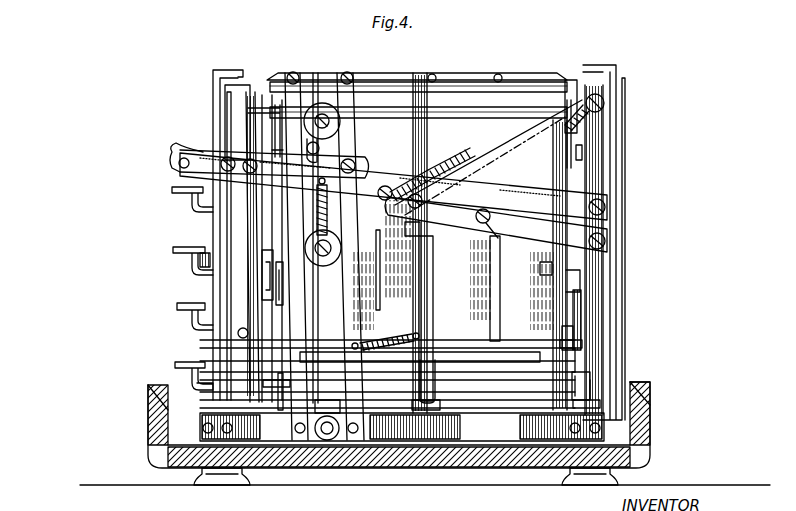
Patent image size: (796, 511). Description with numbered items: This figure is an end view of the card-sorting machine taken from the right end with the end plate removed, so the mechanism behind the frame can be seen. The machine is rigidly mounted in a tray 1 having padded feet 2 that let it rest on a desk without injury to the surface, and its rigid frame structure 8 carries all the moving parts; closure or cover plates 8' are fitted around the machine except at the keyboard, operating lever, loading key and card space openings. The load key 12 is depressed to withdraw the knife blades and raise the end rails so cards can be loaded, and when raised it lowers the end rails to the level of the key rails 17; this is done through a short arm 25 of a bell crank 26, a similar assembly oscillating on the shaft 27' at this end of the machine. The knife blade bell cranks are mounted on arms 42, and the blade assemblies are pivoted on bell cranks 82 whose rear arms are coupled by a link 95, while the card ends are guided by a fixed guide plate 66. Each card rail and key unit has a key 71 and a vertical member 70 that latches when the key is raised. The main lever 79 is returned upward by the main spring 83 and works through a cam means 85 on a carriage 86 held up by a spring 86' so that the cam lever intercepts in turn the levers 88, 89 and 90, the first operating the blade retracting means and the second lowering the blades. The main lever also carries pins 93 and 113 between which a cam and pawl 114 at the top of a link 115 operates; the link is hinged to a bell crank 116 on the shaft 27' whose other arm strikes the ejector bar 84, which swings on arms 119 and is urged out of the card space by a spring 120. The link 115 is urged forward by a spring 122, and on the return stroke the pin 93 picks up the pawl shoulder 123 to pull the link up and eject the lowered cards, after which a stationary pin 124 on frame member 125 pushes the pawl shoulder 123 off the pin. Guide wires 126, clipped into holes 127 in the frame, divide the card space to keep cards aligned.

The tray 1 is at (157, 412).
The padded feet 2 is at (222, 480).
The frame structure 8 is at (444, 276).
The cover plates 8' is at (411, 234).
The load key 12 is at (192, 278).
The key rails 17 is at (520, 392).
The short arm 25 is at (582, 393).
The bell crank 26 is at (278, 397).
The shaft 27' is at (387, 364).
The arm 42 is at (418, 186).
The fixed guide plate 66 is at (542, 266).
The vertical member 70 is at (240, 228).
The key 71 is at (172, 193).
The main lever 79 is at (200, 152).
The bell crank 82 is at (276, 130).
The main spring 83 is at (453, 158).
The ejector bar 84 is at (510, 360).
The cam means 85 is at (322, 160).
The carriage 86 is at (347, 115).
The spring 86' is at (348, 247).
The lever 88 is at (290, 195).
The lever 89 is at (273, 262).
The lever 90 is at (277, 283).
The pin 93 is at (338, 203).
The link 95 is at (583, 152).
The pin 113 is at (492, 225).
The cam and pawl 114 is at (413, 224).
The link 115 is at (433, 292).
The bell crank 116 is at (432, 405).
The arms 119 is at (582, 347).
The spring 120 is at (582, 308).
The spring 122 is at (382, 343).
The pawl shoulder 123 is at (410, 232).
The stationary pin 124 is at (423, 173).
The frame member 125 is at (502, 190).
The guide wires 126 is at (433, 74).
The holes 127 is at (496, 77).